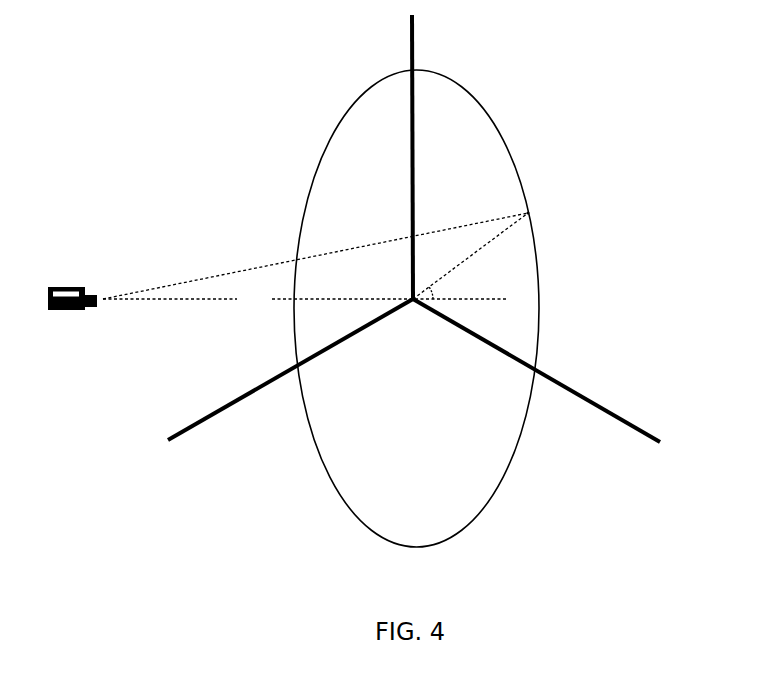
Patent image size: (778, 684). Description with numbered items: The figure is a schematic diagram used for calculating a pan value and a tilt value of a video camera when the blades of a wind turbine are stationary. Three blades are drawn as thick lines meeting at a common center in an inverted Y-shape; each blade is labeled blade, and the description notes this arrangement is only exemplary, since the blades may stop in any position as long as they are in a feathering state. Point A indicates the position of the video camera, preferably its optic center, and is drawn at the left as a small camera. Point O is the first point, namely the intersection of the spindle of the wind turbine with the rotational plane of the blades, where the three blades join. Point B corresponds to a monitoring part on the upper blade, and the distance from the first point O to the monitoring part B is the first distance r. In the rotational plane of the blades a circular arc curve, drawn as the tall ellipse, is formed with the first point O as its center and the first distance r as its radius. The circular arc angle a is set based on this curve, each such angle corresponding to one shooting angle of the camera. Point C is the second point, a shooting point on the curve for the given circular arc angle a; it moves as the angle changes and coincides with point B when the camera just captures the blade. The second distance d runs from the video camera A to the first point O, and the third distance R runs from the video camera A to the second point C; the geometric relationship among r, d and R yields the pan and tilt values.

The video camera position A is at (72, 287).
The monitoring part point B is at (420, 62).
The second point C is at (541, 211).
The first point O is at (413, 314).
The third distance R is at (315, 256).
The first distance r is at (470, 256).
The second distance d is at (305, 303).
The circular arc angle a is at (439, 291).
The element blade is at (414, 237).